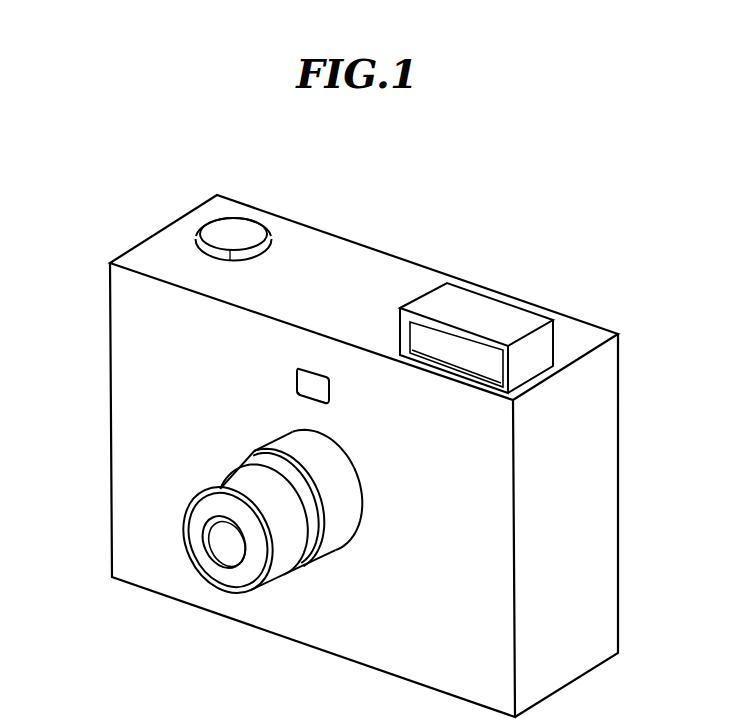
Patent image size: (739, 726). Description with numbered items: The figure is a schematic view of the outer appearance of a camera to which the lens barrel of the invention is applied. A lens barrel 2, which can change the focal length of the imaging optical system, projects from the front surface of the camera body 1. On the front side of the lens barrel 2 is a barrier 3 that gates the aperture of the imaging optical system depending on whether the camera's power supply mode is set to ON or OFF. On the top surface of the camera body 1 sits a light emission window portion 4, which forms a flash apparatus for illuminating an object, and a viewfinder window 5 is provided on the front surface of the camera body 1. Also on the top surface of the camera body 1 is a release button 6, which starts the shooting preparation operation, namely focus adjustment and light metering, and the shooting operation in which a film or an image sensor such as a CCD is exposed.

The camera body 1 is at (110, 432).
The lens barrel 2 is at (288, 543).
The barrier 3 is at (220, 550).
The light emission window portion 4 is at (472, 353).
The viewfinder window 5 is at (311, 377).
The release button 6 is at (222, 232).